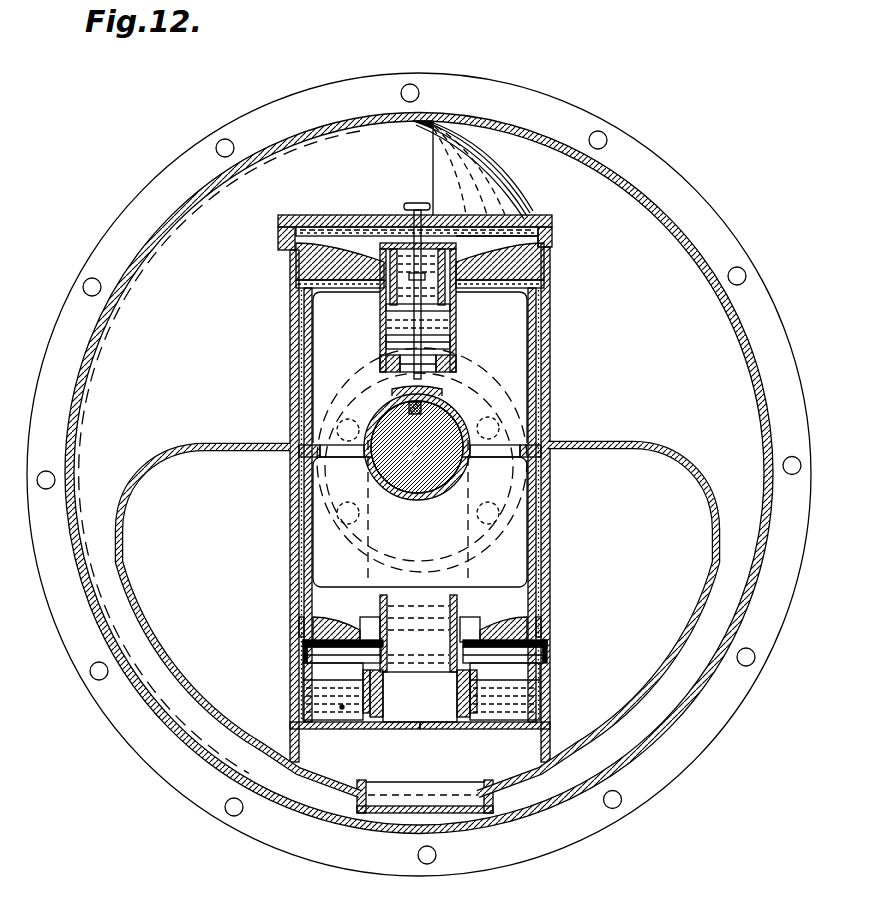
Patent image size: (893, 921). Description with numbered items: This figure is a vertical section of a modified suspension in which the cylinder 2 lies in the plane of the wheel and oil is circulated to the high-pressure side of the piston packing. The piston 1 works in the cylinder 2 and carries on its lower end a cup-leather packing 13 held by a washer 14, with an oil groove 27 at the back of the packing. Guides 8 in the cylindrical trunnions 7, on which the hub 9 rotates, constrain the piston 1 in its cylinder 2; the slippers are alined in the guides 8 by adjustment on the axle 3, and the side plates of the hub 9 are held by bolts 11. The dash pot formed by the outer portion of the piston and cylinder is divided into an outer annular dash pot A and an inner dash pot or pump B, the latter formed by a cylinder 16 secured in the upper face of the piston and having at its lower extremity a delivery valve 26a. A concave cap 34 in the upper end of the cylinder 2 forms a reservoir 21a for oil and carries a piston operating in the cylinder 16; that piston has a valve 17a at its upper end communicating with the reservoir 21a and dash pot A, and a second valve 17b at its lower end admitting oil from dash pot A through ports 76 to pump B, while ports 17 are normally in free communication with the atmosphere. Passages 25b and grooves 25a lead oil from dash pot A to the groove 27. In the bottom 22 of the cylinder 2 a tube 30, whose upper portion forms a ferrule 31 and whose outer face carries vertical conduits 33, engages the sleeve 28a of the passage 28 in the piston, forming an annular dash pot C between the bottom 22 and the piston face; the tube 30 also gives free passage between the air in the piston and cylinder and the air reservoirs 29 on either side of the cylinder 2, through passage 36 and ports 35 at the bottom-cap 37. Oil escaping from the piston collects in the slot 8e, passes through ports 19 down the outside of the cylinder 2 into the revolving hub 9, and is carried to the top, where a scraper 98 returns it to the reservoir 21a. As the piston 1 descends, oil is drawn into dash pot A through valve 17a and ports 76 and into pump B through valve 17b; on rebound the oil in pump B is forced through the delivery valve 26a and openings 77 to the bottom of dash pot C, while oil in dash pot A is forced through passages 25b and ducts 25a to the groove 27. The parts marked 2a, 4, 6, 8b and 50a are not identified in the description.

The piston 1 is at (528, 308).
The cylinder 2 is at (290, 351).
The upper chamber 2a is at (380, 294).
The axle 3 is at (443, 497).
The ball 4 is at (392, 500).
The cap 6 is at (432, 400).
The trunnions 7 is at (518, 481).
The guides 8 is at (468, 399).
The upper guide rollers 8b is at (347, 440).
The slot 8e is at (418, 521).
The hub 9 is at (80, 360).
The bolts 11 is at (85, 284).
The packing 13 is at (310, 652).
The washer 14 is at (547, 651).
The cylinder 16 is at (380, 332).
The ports 17 is at (296, 269).
The valve 17a is at (404, 233).
The second valve 17b is at (390, 309).
The ports 19 is at (470, 576).
The reservoir 21a is at (460, 227).
The bottom 22 is at (343, 729).
The grooves 25a is at (304, 323).
The passages 25b is at (488, 288).
The delivery valve 26a is at (456, 349).
The oil groove 27 is at (548, 628).
The passage 28 is at (380, 617).
The sleeve 28a is at (470, 622).
The air reservoir 29 is at (460, 619).
The tube 30 is at (487, 676).
The ferrule 31 is at (388, 622).
The vertical conduits 33 is at (377, 696).
The concave cap 34 is at (552, 223).
The ports 35 is at (550, 728).
The passage 36 is at (425, 781).
The bottom-cap 37 is at (212, 711).
The bar pockets 50a is at (372, 486).
The ports 76 is at (447, 263).
The openings 77 is at (400, 378).
The scraper 98 is at (500, 172).
The outer annular dash pot A is at (538, 241).
The inner dash pot or pump B is at (450, 323).
The annular dash pot C is at (333, 691).